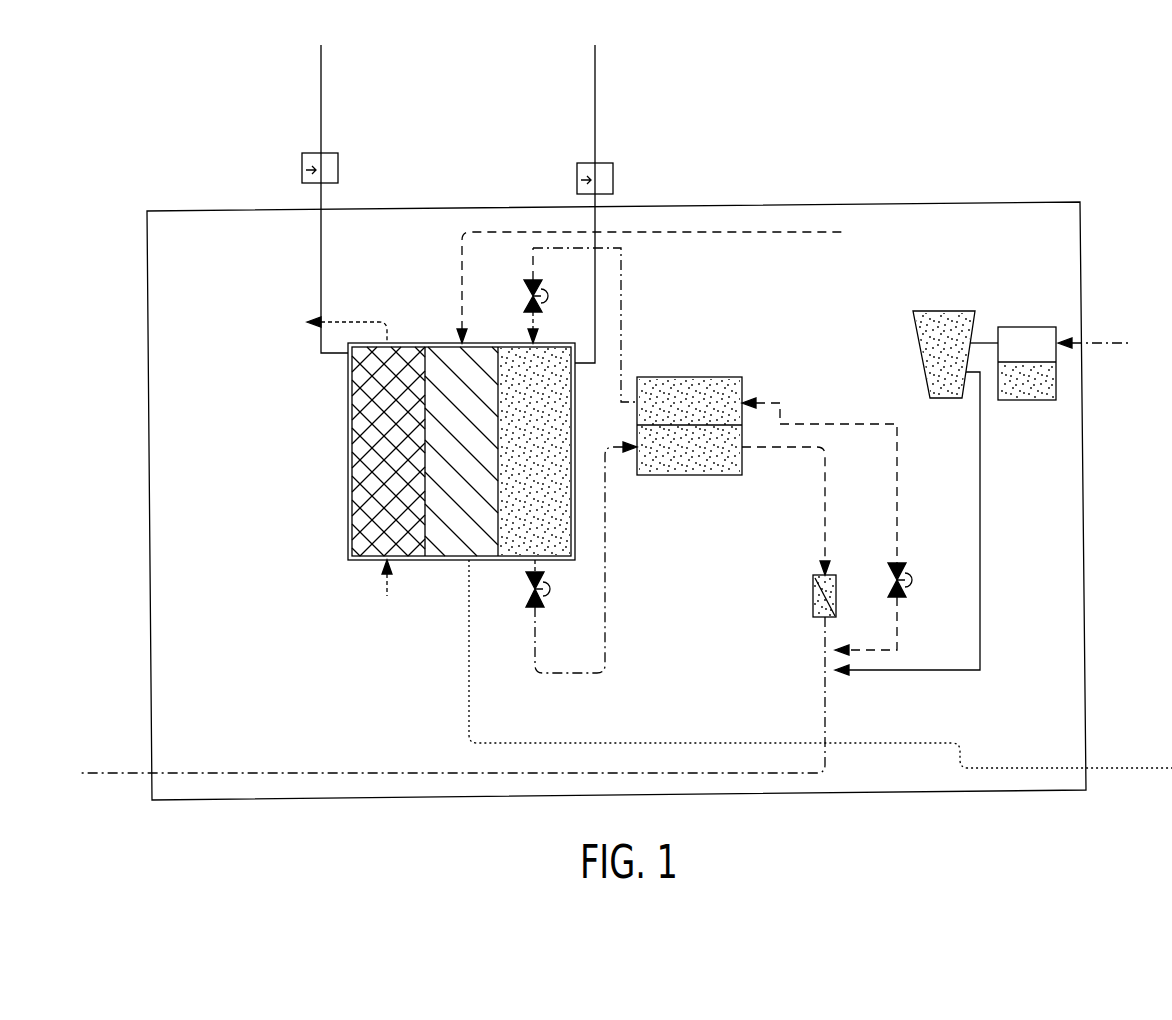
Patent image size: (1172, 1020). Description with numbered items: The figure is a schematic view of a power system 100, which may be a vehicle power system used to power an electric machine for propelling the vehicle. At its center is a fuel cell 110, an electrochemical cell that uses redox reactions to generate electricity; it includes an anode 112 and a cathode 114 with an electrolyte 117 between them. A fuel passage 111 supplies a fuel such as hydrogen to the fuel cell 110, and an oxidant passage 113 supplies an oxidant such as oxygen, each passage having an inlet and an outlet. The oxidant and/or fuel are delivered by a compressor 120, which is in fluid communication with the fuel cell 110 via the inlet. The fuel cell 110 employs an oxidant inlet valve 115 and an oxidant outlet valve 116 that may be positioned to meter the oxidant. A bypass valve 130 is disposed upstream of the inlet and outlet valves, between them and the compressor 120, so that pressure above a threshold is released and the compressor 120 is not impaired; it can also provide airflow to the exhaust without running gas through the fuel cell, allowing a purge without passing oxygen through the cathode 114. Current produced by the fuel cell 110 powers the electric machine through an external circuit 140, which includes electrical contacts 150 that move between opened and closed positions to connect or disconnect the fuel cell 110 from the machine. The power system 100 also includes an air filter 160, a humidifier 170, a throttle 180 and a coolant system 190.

The power system 100 is at (1022, 140).
The fuel cell 110 is at (315, 597).
The fuel passage 111 is at (362, 322).
The anode 112 is at (358, 478).
The oxidant passage 113 is at (622, 285).
The cathode 114 is at (516, 553).
The oxidant inlet valve 115 is at (528, 292).
The oxidant outlet valve 116 is at (551, 600).
The electrolyte 117 is at (446, 553).
The compressor 120 is at (946, 400).
The bypass valve 130 is at (925, 580).
The external circuit 140 is at (322, 113).
The electrical contacts 150 is at (302, 171).
The air filter 160 is at (1037, 362).
The humidifier 170 is at (696, 476).
The throttle 180 is at (818, 617).
The coolant system 190 is at (526, 230).